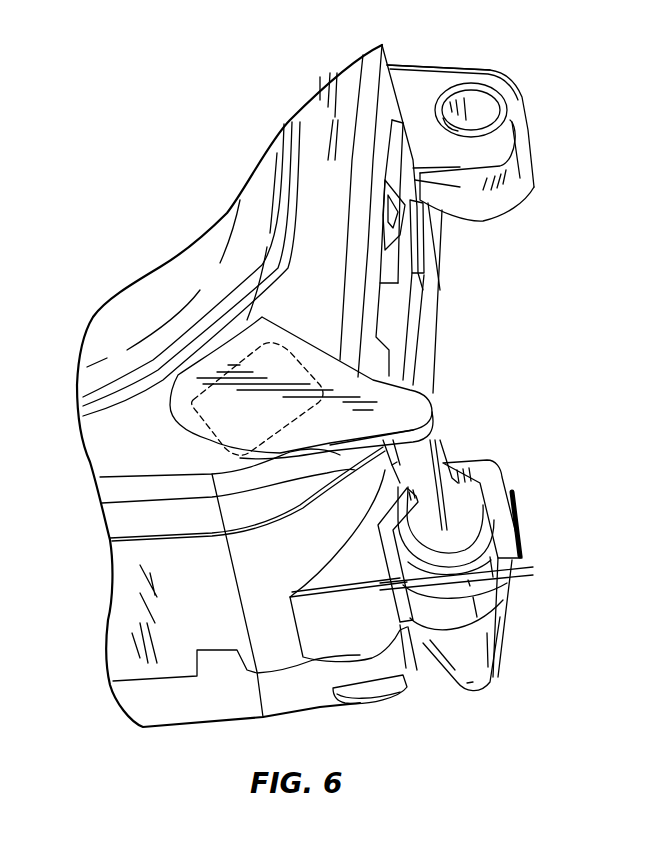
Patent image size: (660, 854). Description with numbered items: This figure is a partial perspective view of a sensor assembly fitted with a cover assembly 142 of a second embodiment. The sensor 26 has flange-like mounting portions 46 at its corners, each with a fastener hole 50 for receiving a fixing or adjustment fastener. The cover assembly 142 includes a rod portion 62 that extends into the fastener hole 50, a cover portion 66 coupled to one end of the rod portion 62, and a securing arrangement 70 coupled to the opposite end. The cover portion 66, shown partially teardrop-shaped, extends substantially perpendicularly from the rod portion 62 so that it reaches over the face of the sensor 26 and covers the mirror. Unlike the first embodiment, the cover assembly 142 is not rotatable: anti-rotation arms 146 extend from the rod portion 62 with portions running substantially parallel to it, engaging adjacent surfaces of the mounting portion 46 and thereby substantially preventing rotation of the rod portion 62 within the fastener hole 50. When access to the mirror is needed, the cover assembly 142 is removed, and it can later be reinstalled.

The sensor 26 is at (128, 575).
The mounting portion 46 is at (528, 120).
The fastener hole 50 is at (483, 102).
The rod portion 62 is at (440, 518).
The cover portion 66 is at (310, 353).
The securing arrangement 70 is at (513, 662).
The cover assembly 142 is at (459, 384).
The arms 146 is at (417, 590).